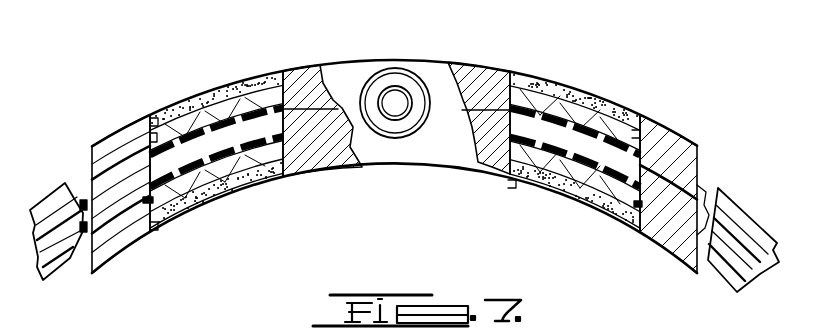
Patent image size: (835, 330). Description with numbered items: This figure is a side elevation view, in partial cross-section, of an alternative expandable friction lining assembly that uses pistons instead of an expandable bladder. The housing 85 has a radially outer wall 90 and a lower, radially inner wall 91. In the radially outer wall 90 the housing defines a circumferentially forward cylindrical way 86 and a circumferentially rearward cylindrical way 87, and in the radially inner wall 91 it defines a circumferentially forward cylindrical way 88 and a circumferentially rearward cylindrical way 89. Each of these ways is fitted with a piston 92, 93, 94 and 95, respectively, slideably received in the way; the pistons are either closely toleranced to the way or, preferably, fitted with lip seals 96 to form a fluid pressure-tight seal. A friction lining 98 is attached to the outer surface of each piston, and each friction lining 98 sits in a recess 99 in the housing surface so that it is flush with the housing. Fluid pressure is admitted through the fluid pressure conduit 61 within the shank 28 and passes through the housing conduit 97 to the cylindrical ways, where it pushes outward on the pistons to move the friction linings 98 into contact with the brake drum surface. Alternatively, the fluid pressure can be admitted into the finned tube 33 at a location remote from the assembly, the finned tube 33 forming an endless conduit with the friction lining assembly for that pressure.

The shank 28 is at (390, 138).
The finned tube 33 is at (62, 272).
The fluid pressure conduit 61 is at (392, 100).
The housing 85 is at (308, 158).
The circumferentially forward cylindrical ways 86 is at (147, 132).
The circumferentially rearward cylindrical way 87 is at (648, 140).
The circumferentially forward cylindrical way 88 is at (150, 200).
The circumferentially rearward cylindrical way 89 is at (636, 205).
The radially outer wall 90 is at (323, 62).
The radially inner wall 91 is at (422, 165).
The piston 92 is at (200, 117).
The piston 93 is at (592, 118).
The piston 94 is at (190, 188).
The piston 95 is at (591, 182).
The lip seals 96 is at (247, 112).
The housing conduit 97 is at (333, 110).
The friction lining 98 is at (164, 108).
The recess 99 is at (152, 120).